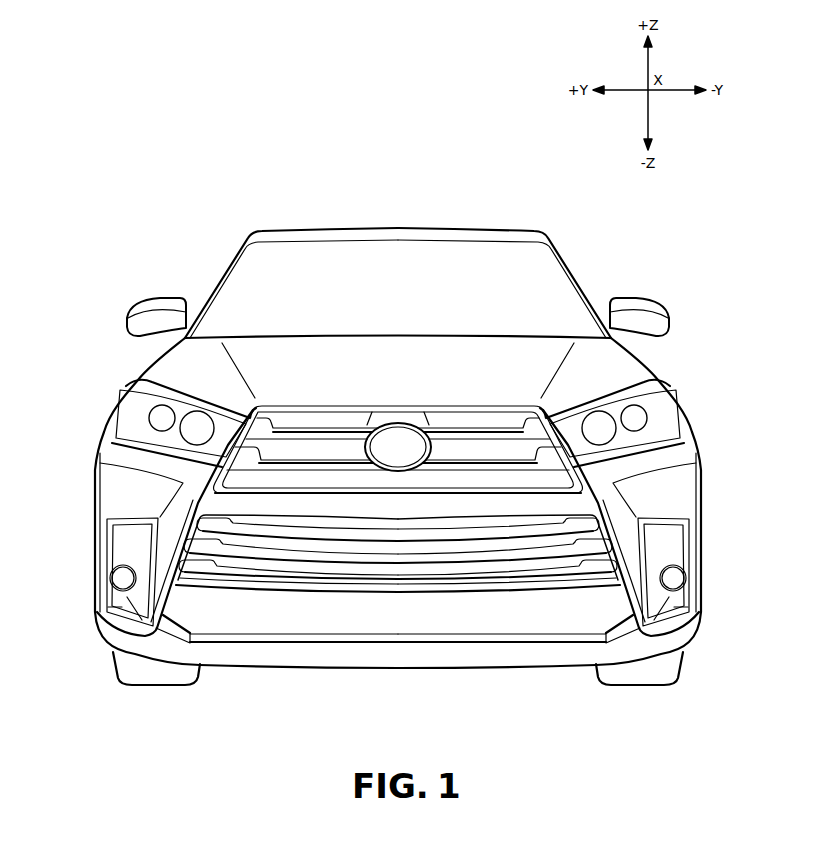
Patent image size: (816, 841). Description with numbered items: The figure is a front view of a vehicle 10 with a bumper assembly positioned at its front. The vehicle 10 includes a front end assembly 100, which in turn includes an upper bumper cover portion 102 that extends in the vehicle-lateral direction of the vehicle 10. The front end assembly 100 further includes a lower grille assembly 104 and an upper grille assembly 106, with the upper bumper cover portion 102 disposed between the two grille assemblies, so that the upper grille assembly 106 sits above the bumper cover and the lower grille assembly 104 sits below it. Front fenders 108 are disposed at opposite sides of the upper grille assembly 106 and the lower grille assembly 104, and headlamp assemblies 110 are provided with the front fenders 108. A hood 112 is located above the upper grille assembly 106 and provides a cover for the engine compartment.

The vehicle 10 is at (614, 255).
The front end assembly 100 is at (89, 459).
The upper bumper cover portion 102 is at (307, 505).
The lower grille assembly 104 is at (596, 569).
The upper grille assembly 106 is at (510, 435).
The front fenders 108 is at (86, 510).
The headlamp assemblies 110 is at (108, 380).
The hood 112 is at (627, 366).